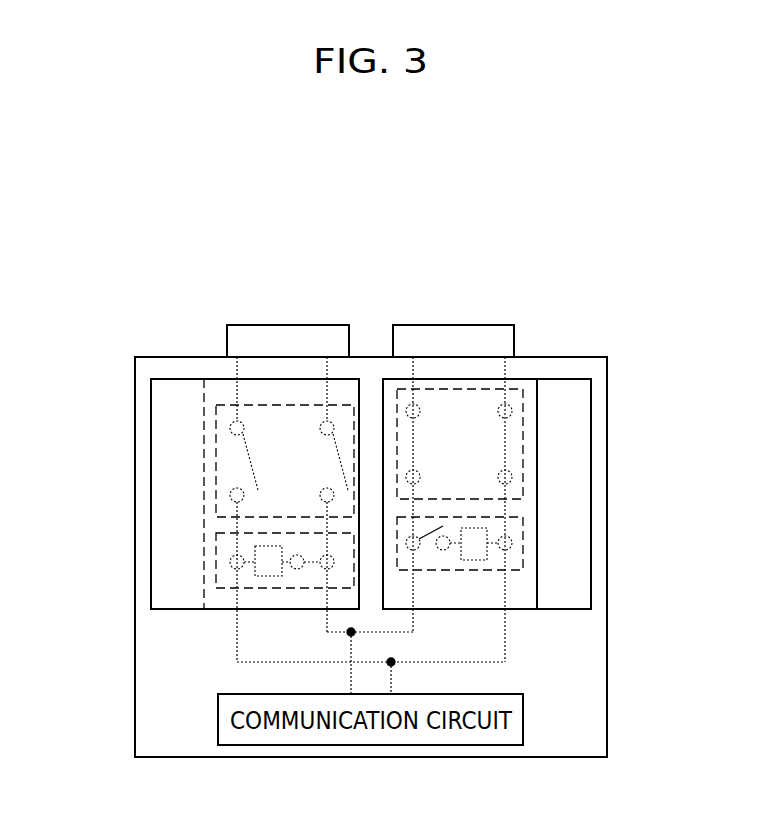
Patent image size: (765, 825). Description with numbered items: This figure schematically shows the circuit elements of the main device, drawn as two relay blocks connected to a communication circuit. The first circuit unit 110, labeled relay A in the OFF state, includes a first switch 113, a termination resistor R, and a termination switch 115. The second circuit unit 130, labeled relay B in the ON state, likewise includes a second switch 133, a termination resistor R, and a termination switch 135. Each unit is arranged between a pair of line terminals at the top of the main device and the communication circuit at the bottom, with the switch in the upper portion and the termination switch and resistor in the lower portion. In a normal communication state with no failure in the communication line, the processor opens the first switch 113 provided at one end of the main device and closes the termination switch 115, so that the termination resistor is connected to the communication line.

The first circuit unit 110 is at (151, 389).
The first switch 113 is at (216, 416).
The termination switch 115 is at (216, 571).
The second circuit unit 130 is at (591, 389).
The second switch 133 is at (523, 415).
The termination switch 135 is at (523, 571).